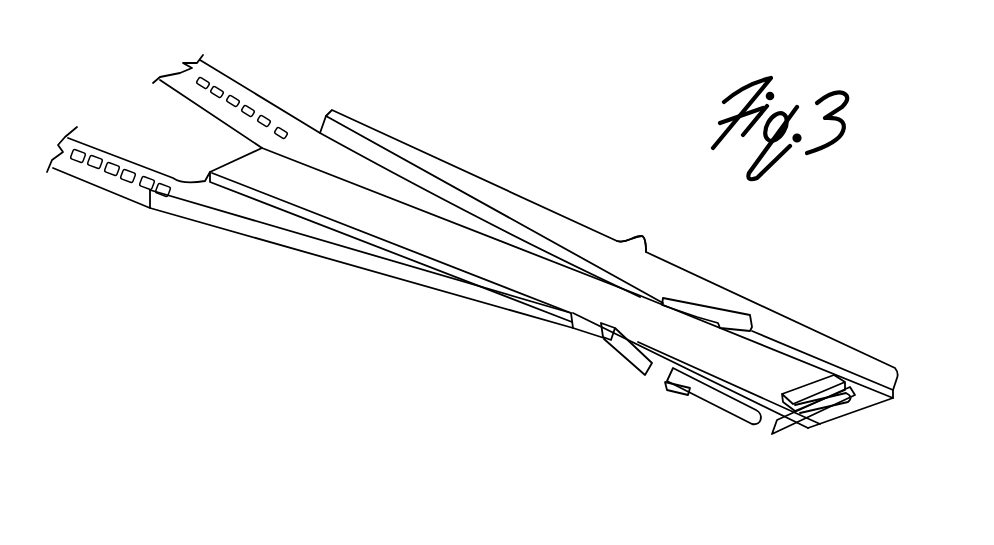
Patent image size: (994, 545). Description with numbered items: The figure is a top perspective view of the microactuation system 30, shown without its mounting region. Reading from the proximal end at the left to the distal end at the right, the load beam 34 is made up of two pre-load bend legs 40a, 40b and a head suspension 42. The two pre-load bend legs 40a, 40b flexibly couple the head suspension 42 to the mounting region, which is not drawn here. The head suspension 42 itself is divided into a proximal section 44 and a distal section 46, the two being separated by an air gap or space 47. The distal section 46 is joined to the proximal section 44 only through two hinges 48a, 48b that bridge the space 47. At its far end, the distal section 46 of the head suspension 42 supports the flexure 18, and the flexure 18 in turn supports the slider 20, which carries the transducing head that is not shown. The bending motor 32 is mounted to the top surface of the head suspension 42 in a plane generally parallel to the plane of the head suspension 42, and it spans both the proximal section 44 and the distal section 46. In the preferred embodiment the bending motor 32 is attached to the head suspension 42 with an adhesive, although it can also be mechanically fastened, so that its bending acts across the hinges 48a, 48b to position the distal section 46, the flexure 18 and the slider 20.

The microactuation system 30 is at (639, 101).
The bending motor 32 is at (385, 208).
The load beam 34 is at (380, 288).
The pre-load bend leg 40a is at (250, 102).
The pre-load bend leg 40b is at (117, 190).
The head suspension 42 is at (640, 240).
The proximal section 44 is at (227, 202).
The distal section 46 is at (661, 385).
The space 47 is at (605, 362).
The hinge 48a is at (712, 312).
The hinge 48b is at (612, 339).
The flexure 18 is at (720, 415).
The slider 20 is at (790, 437).